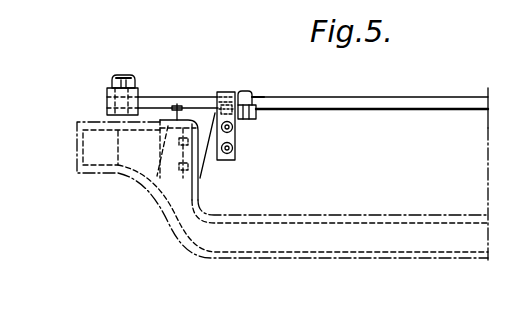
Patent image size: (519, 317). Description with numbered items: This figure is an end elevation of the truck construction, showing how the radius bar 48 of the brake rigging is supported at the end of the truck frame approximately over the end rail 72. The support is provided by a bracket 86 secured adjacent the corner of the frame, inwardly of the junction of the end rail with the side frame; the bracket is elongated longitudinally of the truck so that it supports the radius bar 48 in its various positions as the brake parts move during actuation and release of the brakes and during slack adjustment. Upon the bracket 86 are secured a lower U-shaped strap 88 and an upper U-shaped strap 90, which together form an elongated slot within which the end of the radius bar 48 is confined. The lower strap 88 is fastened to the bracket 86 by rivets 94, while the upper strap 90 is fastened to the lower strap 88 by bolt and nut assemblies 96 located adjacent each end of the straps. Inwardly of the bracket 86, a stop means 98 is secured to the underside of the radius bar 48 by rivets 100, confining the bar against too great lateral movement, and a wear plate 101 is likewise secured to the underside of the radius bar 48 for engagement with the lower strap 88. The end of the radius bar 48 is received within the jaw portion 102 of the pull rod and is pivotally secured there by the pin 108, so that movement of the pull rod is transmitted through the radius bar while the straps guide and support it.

The radius bar 48 is at (389, 103).
The end rail 72 is at (366, 231).
The bracket 86 is at (200, 110).
The lower U-shaped strap 88 is at (150, 178).
The upper U-shaped strap 90 is at (241, 91).
The rivets 94 is at (236, 115).
The bolt and nut assemblies 96 is at (236, 131).
The stop means 98 is at (252, 113).
The rivets 100 is at (254, 94).
The wear plate 101 is at (214, 104).
The jaw portion 102 is at (139, 89).
The pin 108 is at (124, 76).